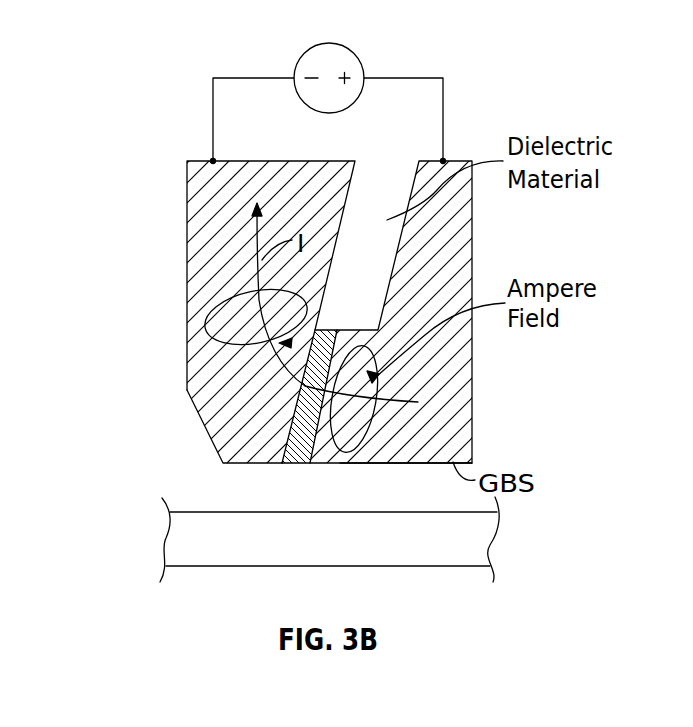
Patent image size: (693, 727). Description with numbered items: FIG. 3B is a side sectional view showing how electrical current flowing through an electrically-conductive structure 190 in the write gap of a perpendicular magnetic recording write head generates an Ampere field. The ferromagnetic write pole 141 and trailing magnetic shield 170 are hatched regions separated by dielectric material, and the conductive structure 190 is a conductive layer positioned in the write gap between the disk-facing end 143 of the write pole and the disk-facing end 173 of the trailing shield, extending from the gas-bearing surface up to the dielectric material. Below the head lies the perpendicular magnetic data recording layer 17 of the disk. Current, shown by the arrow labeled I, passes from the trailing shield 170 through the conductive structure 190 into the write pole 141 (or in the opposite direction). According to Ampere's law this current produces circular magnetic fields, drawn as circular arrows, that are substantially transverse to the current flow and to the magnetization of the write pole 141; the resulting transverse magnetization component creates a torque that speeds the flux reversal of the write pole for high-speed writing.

The write pole 141 is at (220, 280).
The disk-facing end of write pole 143 is at (228, 463).
The trailing magnetic shield 170 is at (457, 390).
The disk-facing end of trailing shield 173 is at (367, 462).
The electrically-conductive structure 190 is at (337, 322).
The perpendicular magnetic data recording layer 17 is at (160, 538).